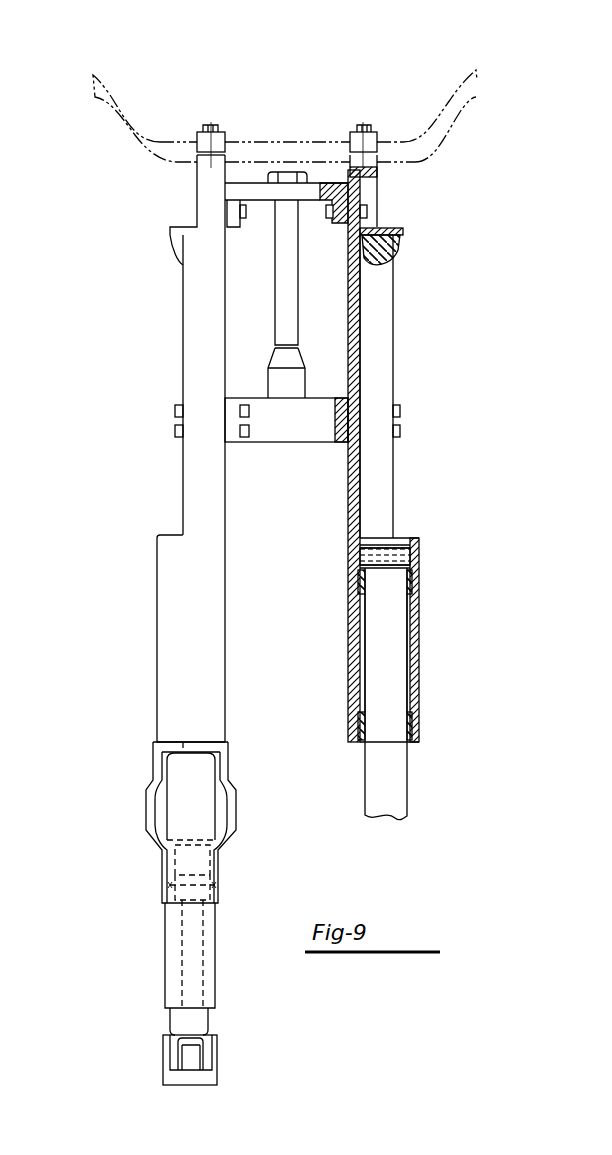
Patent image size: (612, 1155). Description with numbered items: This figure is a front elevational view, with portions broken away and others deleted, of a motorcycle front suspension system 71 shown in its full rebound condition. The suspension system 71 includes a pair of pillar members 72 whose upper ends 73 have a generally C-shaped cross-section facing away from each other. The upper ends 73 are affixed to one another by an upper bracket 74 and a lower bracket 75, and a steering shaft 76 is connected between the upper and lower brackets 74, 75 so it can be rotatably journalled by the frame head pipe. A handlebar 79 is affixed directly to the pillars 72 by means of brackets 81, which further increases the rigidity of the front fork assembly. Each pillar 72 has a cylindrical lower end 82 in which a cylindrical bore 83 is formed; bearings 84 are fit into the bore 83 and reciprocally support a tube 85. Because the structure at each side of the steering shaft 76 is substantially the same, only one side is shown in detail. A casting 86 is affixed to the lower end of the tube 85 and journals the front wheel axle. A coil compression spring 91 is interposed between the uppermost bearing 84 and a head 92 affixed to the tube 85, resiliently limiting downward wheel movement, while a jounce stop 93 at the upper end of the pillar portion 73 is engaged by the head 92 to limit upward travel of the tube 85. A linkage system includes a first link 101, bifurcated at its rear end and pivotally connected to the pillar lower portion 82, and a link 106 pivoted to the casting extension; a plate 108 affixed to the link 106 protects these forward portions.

The motorcycle front suspension system 71 is at (153, 548).
The pillar member 72 is at (156, 591).
The upper end 73 is at (183, 272).
The upper bracket 74 is at (233, 188).
The lower bracket 75 is at (267, 438).
The steering shaft 76 is at (283, 287).
The handlebar 79 is at (276, 142).
The bracket 81 is at (207, 125).
The cylindrical lower end 82 is at (157, 650).
The cylindrical bore 83 is at (398, 664).
The bearing 84 is at (360, 585).
The tube 85 is at (183, 748).
The casting 86 is at (170, 1078).
The coil compression spring 91 is at (360, 551).
The head 92 is at (395, 538).
The jounce stop 93 is at (178, 242).
The first link 101 is at (162, 780).
The link 106 is at (188, 1020).
The plate 108 is at (177, 805).